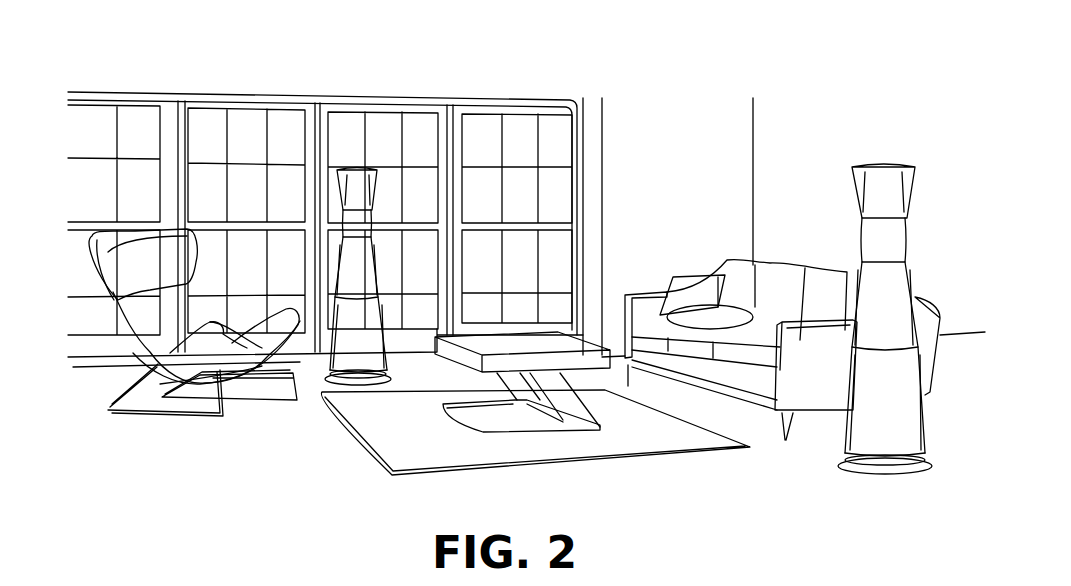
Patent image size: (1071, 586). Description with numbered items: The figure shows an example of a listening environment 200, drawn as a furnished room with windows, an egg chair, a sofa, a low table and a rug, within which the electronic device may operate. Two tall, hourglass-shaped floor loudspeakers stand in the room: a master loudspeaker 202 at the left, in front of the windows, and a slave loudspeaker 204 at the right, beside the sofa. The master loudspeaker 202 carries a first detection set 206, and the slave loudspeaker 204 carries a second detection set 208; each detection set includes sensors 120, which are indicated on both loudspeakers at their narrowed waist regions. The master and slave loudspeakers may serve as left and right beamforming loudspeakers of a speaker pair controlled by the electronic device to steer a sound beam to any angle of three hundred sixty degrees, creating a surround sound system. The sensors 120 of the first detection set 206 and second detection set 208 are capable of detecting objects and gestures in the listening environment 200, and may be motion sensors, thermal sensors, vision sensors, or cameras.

The listening environment 200 is at (673, 84).
The master loudspeaker 202 is at (306, 213).
The slave loudspeaker 204 is at (906, 290).
The first detection set 206 is at (337, 197).
The second detection set 208 is at (907, 228).
The sensors 120 is at (372, 216).